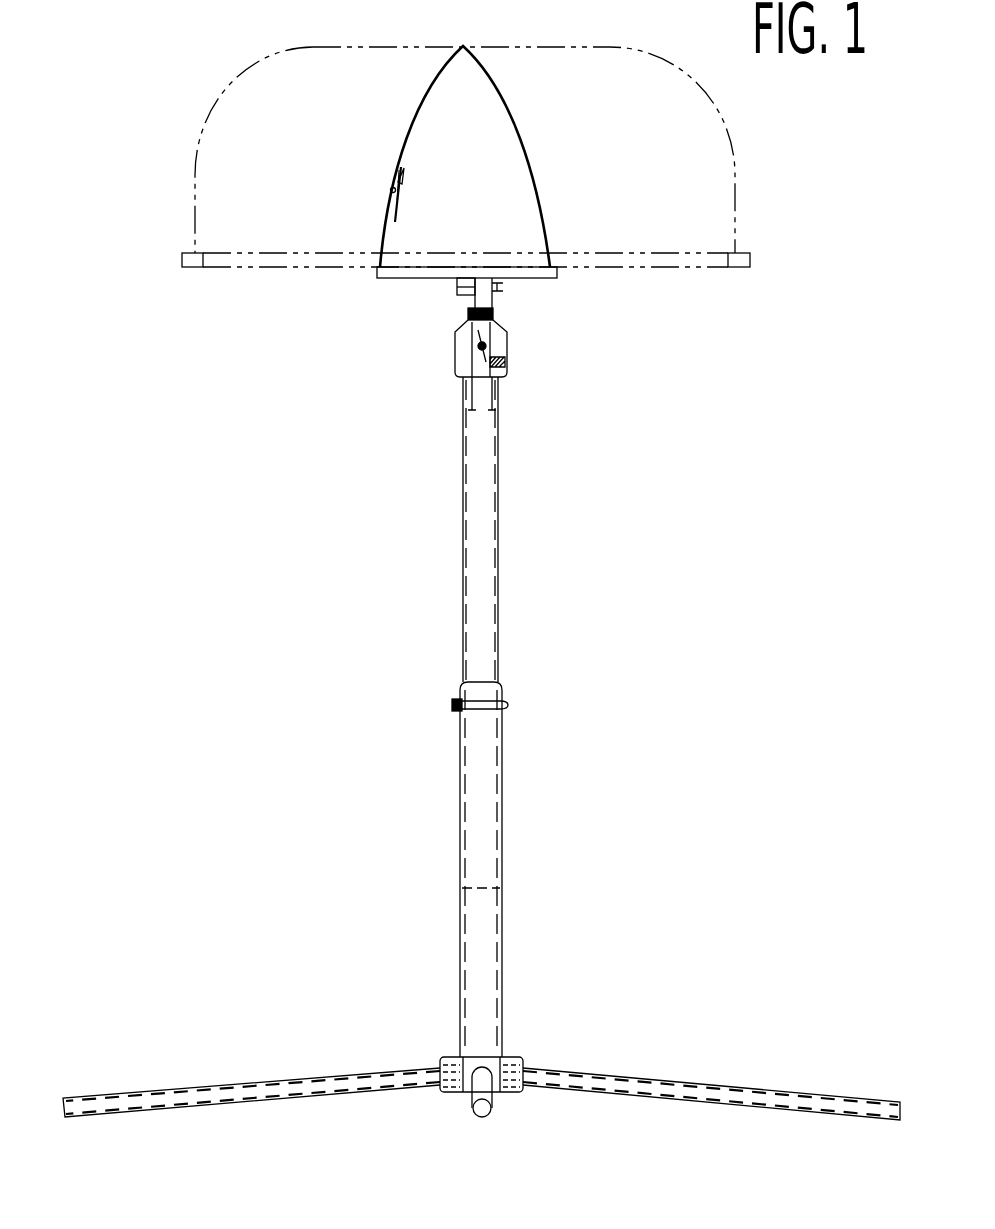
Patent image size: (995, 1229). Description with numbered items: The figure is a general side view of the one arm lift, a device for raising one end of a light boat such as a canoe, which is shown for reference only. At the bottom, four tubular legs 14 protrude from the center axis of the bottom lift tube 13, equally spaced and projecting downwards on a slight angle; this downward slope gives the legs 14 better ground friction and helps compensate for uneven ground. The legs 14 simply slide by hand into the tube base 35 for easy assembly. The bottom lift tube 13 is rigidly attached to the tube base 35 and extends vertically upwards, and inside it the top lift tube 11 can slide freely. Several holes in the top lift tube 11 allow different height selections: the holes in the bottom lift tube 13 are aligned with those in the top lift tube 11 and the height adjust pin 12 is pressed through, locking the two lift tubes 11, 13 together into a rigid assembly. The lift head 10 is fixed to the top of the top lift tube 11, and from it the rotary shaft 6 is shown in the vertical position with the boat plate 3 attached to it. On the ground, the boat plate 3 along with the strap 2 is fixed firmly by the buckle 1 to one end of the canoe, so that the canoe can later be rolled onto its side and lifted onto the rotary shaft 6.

The buckle 1 is at (329, 163).
The strap 2 is at (508, 156).
The boat plate 3 is at (466, 291).
The rotary shaft 6 is at (399, 315).
The lift head 10 is at (554, 349).
The top lift tube 11 is at (548, 529).
The height adjust pin 12 is at (399, 677).
The bottom lift tube 13 is at (543, 869).
The tubular legs 14 is at (481, 1053).
The tube base 35 is at (552, 1119).